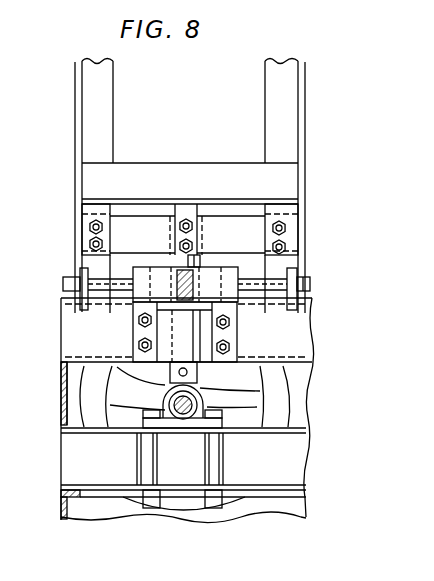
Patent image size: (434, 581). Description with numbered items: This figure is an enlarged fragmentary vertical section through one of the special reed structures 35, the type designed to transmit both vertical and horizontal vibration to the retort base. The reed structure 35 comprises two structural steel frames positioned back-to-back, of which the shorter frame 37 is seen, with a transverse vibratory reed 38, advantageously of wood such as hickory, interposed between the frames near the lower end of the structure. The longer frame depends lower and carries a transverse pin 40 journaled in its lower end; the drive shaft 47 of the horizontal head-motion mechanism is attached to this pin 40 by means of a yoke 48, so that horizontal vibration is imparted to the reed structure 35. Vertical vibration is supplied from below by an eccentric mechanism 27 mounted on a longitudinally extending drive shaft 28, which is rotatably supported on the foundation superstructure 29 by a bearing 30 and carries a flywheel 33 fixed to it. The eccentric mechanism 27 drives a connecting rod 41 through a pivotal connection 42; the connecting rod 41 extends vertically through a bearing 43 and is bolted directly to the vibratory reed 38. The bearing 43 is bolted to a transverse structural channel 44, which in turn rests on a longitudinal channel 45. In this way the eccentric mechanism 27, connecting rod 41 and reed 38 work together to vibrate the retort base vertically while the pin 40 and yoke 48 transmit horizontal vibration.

The eccentric mechanism 27 is at (205, 394).
The drive shaft 28 is at (165, 401).
The foundation superstructure 29 is at (76, 458).
The bearing 30 is at (200, 427).
The flywheel 33 is at (275, 397).
The reed structure 35 is at (194, 152).
The frame 37 is at (282, 133).
The vibratory reed 38 is at (250, 232).
The transverse pin 40 is at (311, 288).
The connecting rod 41 is at (179, 262).
The pivotal connection 42 is at (178, 373).
The bearing 43 is at (183, 333).
The transverse structural channel 44 is at (305, 341).
The longitudinal channel 45 is at (61, 394).
The drive shaft 47 is at (194, 284).
The yoke 48 is at (228, 296).